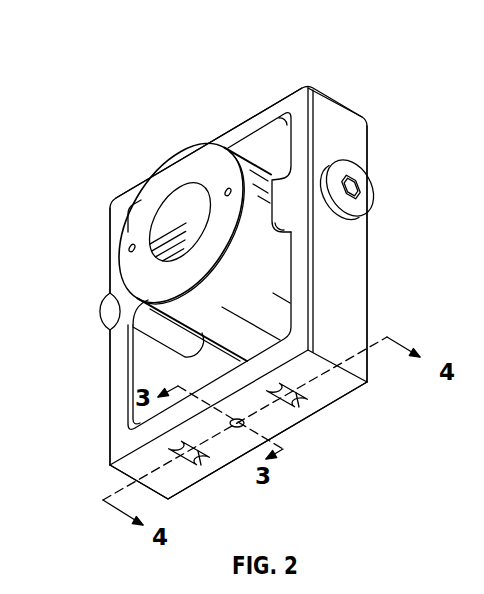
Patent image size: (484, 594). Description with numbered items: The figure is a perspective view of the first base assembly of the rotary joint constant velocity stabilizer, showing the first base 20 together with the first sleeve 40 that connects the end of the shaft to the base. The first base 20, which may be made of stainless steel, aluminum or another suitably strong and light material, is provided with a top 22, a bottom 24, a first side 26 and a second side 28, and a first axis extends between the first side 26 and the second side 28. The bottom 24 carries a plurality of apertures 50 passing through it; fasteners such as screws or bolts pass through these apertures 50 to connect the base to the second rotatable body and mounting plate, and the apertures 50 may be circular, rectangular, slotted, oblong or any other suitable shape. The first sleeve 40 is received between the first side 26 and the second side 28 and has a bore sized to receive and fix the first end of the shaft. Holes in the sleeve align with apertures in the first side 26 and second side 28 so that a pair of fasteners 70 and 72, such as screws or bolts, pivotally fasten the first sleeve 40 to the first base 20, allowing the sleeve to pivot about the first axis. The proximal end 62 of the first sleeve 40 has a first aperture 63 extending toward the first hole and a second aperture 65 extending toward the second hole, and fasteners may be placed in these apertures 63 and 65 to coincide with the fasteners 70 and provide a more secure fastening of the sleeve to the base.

The first base 20 is at (299, 89).
The top 22 is at (212, 136).
The bottom 24 is at (110, 468).
The first side 26 is at (369, 297).
The second side 28 is at (109, 417).
The first sleeve 40 is at (154, 190).
The apertures 50 is at (198, 458).
The proximal end 62 is at (224, 250).
The first aperture 63 is at (224, 191).
The second aperture 65 is at (128, 247).
The fastener 70 is at (376, 196).
The fastener 72 is at (103, 303).